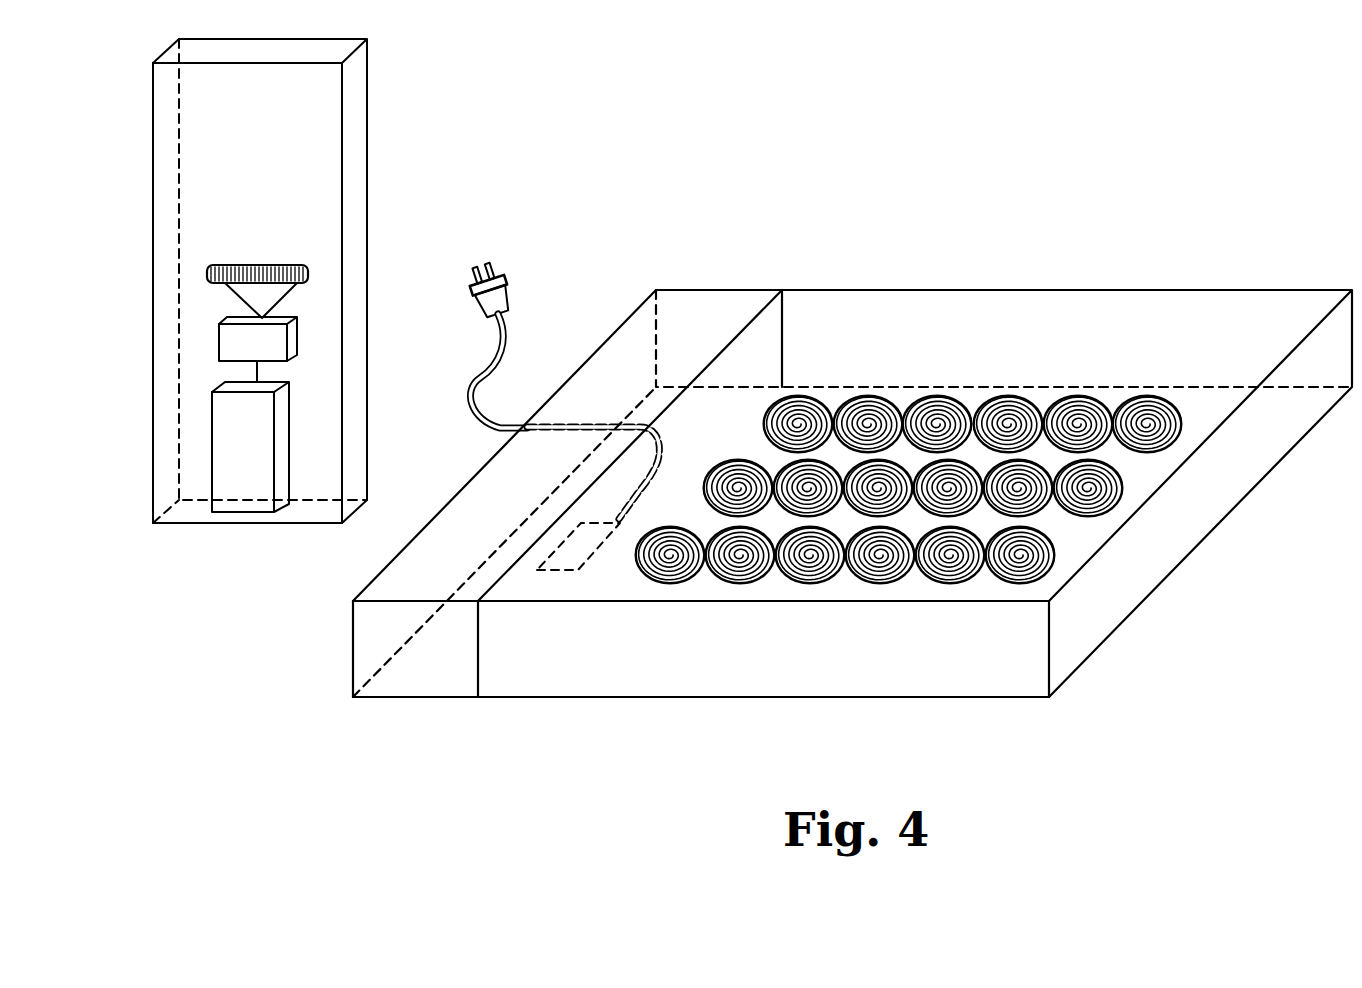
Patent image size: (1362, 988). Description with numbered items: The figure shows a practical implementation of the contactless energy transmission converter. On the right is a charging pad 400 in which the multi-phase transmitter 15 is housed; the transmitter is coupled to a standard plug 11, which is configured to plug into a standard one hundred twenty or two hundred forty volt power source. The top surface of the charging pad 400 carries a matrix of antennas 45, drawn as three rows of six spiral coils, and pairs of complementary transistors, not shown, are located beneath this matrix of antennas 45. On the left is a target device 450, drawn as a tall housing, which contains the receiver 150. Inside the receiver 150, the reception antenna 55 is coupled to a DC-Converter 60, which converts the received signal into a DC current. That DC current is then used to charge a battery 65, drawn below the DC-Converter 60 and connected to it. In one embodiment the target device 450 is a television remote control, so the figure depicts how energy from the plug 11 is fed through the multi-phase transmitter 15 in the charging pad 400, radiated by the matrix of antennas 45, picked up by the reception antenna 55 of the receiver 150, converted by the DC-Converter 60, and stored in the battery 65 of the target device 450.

The standard plug 11 is at (492, 258).
The multi-phase transmitter 15 is at (578, 545).
The matrix of antennas 45 is at (993, 396).
The reception antenna 55 is at (255, 262).
The DC-Converter 60 is at (258, 349).
The battery 65 is at (250, 447).
The receiver 150 is at (198, 371).
The charging pad 400 is at (1147, 556).
The target device 450 is at (213, 525).